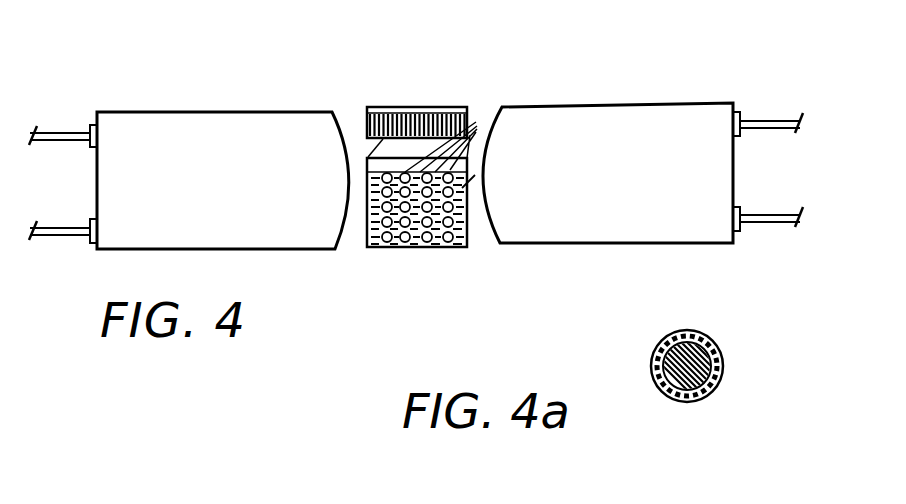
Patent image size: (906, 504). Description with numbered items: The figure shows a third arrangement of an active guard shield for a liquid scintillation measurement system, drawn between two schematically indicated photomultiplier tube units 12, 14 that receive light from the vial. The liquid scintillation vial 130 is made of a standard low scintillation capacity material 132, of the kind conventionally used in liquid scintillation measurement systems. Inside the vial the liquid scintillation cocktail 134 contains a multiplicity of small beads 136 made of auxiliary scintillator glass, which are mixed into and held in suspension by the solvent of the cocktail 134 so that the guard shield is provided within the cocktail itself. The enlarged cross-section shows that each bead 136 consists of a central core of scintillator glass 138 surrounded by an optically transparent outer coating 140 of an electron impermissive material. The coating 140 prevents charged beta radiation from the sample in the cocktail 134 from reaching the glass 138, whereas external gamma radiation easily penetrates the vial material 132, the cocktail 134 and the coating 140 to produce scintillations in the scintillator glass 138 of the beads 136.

In FIG. 4, the first capacitor body 12 is at (193, 118).
In FIG. 4, the second capacitor body 14 is at (549, 118).
In FIG. 4, the liquid scintillation vial 130 is at (414, 97).
In FIG. 4, the low scintillation capacity material 132 is at (367, 160).
In FIG. 4, the liquid scintillation cocktail 134 is at (438, 245).
In FIG. 4, the beads 136 is at (476, 125).
In FIG. 4a, the beads 136 is at (689, 328).
In FIG. 4a, the scintillator glass 138 is at (712, 342).
In FIG. 4a, the outer coating 140 is at (668, 342).